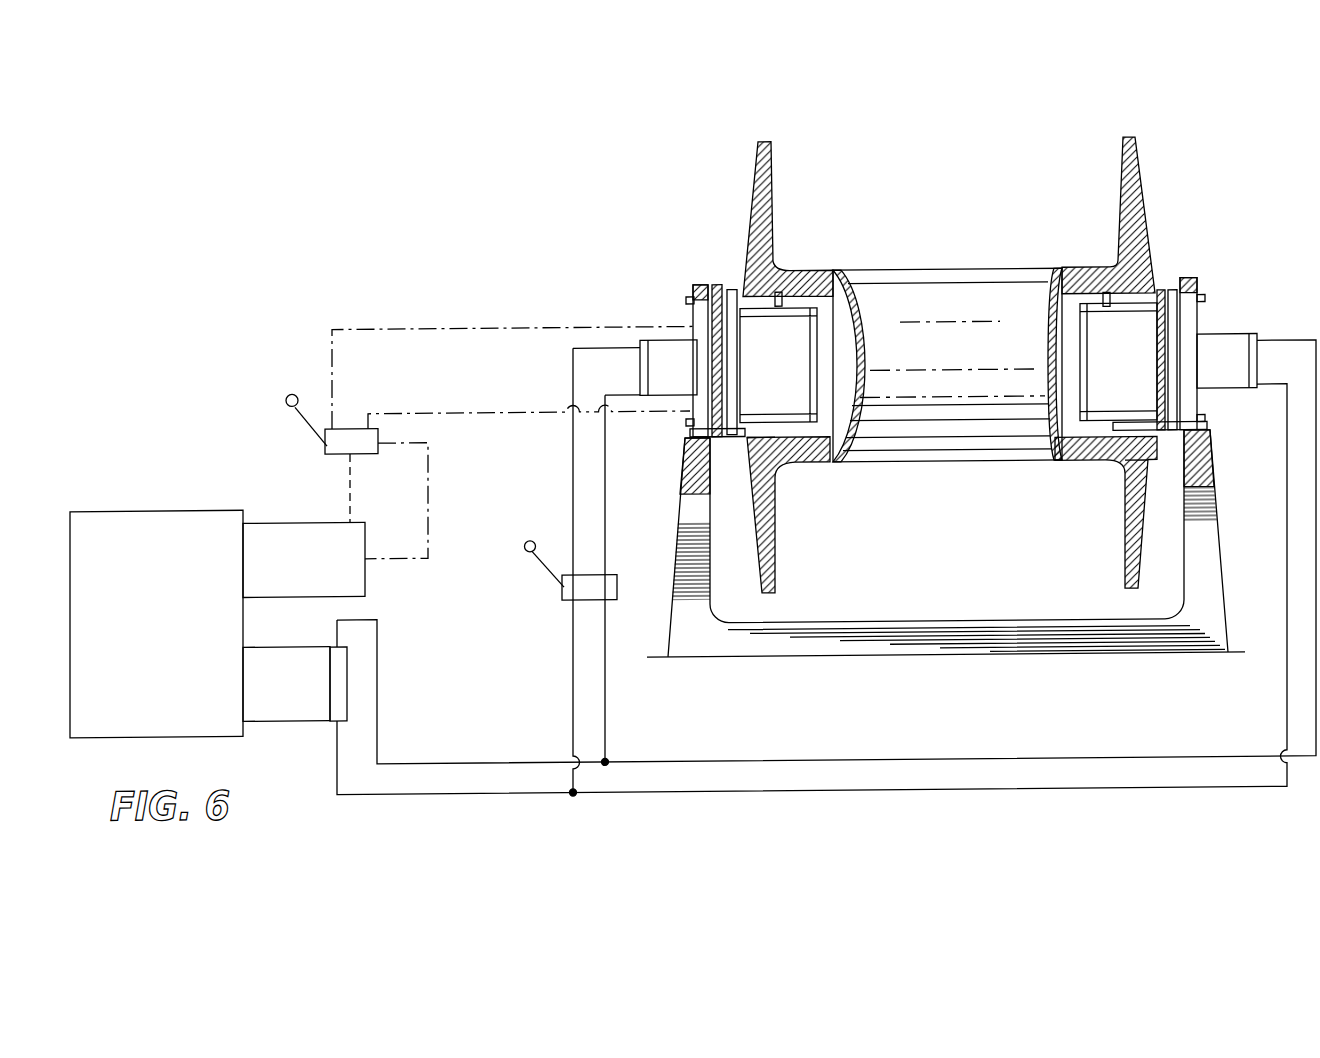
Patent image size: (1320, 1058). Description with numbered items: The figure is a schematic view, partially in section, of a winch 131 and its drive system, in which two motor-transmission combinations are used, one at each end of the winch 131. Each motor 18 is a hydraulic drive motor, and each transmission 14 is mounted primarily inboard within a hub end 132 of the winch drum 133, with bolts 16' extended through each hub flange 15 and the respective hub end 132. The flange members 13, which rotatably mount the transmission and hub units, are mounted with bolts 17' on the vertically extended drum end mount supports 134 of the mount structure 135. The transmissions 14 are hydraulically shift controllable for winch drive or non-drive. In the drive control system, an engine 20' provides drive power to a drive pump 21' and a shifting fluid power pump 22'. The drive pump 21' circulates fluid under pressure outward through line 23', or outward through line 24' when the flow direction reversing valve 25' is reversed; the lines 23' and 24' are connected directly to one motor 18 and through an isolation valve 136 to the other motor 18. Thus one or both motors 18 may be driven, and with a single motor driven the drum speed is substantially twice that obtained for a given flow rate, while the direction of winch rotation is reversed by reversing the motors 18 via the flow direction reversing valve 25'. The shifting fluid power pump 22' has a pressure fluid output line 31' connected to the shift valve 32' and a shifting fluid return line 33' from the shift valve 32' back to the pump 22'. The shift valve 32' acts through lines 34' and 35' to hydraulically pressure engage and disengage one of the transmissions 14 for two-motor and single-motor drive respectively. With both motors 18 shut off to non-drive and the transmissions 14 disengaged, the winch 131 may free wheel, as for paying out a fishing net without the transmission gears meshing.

The winch 131 is at (1150, 193).
The hub end 132 is at (745, 288).
The winch drum 133 is at (912, 277).
The drum end mount support 134 is at (680, 514).
The mount structure 135 is at (936, 630).
The isolation valve 136 is at (617, 590).
The flange member 13 is at (725, 367).
The transmission 14 is at (830, 368).
The hub flange 15 is at (737, 452).
The bolt 16' is at (942, 266).
The bolt 17' is at (951, 343).
The motor 18 is at (650, 369).
The engine 20' is at (156, 603).
The drive pump 21' is at (286, 711).
The shifting fluid power pump 22' is at (304, 532).
The line 23' is at (826, 554).
The line 24' is at (812, 570).
The flow direction reversing valve 25' is at (353, 710).
The pressure fluid output line 31' is at (372, 488).
The shift valve 32' is at (344, 413).
The shifting fluid return line 33' is at (427, 500).
The line 34' is at (512, 351).
The line 35' is at (529, 400).